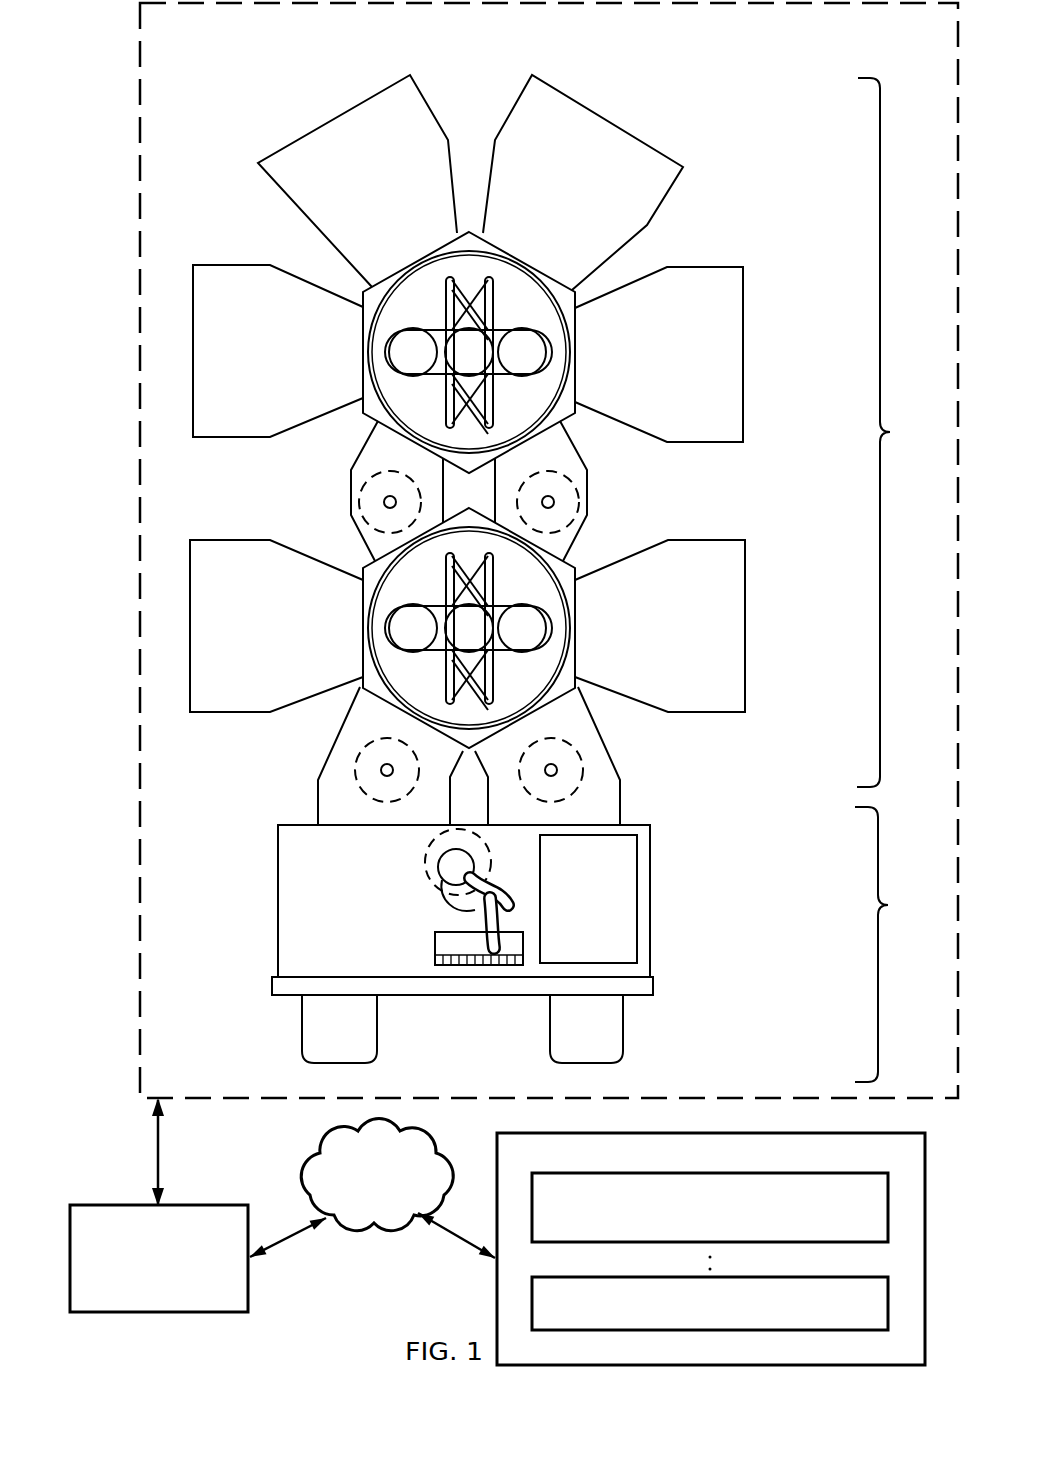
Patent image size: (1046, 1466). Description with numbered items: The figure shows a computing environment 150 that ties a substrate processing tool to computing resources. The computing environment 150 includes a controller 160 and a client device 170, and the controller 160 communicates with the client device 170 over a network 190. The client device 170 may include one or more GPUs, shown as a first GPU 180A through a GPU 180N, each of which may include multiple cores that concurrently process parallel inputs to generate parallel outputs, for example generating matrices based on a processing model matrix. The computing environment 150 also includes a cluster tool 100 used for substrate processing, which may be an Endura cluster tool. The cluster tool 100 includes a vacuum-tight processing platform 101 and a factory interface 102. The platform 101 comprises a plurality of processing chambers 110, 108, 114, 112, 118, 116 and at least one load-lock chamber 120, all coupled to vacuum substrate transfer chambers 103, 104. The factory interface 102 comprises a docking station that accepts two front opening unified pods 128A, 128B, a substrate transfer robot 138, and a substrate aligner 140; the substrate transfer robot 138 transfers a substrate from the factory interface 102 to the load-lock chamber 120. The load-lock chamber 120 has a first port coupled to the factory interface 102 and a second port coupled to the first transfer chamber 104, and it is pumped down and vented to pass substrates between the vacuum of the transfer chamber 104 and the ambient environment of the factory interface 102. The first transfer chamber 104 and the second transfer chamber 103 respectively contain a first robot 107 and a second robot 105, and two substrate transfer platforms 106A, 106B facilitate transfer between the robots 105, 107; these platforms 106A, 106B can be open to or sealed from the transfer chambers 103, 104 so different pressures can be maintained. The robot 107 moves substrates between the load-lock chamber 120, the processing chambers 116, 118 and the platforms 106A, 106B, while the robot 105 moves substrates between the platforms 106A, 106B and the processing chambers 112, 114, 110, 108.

The cluster tool 100 is at (549, 550).
The vacuum-tight processing platform 101 is at (545, 439).
The factory interface 102 is at (608, 944).
The second transfer chamber 103 is at (469, 352).
The first transfer chamber 104 is at (469, 628).
The second robot 105 is at (488, 390).
The substrate transfer platform 106A is at (541, 491).
The substrate transfer platform 106B is at (397, 491).
The first robot 107 is at (487, 668).
The processing chamber 108 is at (605, 115).
The processing chamber 110 is at (333, 120).
The processing chamber 112 is at (743, 383).
The processing chamber 114 is at (232, 265).
The processing chamber 116 is at (695, 540).
The processing chamber 118 is at (313, 558).
The load-lock chamber 120 is at (328, 760).
The front opening unified pod 128A is at (339, 1029).
The front opening unified pod 128B is at (586, 1029).
The substrate transfer robot 138 is at (450, 968).
The substrate aligner 140 is at (650, 872).
The computing environment 150 is at (95, 58).
The controller 160 is at (198, 1205).
The client device 170 is at (711, 1249).
The first GPU 180A is at (710, 1207).
The GPU 180N is at (710, 1303).
The network 190 is at (398, 1188).